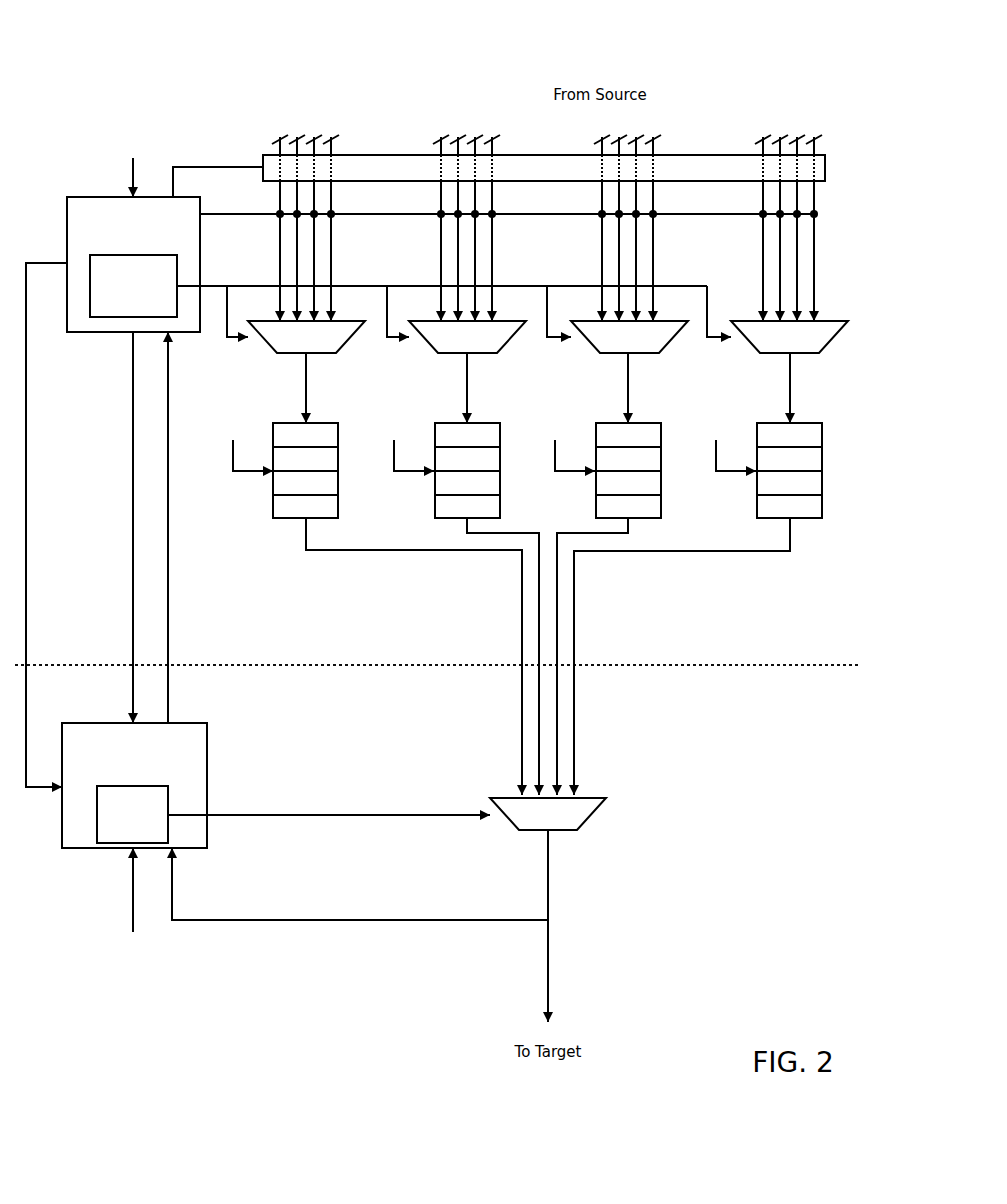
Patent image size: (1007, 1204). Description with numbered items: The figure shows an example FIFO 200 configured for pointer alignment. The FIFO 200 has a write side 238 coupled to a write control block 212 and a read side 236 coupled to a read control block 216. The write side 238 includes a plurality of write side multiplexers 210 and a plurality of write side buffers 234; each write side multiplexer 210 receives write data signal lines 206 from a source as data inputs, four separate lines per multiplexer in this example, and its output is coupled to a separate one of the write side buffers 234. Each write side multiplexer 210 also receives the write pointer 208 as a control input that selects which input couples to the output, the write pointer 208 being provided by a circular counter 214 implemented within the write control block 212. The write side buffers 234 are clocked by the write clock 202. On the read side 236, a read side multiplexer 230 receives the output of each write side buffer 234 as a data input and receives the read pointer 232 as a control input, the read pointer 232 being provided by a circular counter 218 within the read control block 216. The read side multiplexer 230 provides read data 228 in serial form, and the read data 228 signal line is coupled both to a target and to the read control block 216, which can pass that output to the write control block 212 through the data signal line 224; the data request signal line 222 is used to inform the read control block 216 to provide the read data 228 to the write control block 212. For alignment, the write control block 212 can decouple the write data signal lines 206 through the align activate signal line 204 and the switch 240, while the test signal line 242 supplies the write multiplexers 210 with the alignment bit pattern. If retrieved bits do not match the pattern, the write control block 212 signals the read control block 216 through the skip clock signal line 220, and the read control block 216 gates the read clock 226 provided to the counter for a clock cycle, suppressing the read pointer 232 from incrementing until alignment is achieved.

The FIFO 200 is at (325, 44).
The write clock W_Clk 202 is at (433, 284).
The align activate signal line 204 is at (218, 158).
The write data signal lines 206 is at (547, 196).
The write pointer 208 is at (454, 285).
The write side multiplexer 210 is at (548, 372).
The write control block 212 is at (133, 264).
The circular counter 214 is at (133, 286).
The read control block 216 is at (134, 785).
The circular counter 218 is at (132, 814).
The skip clock signal line 220 is at (101, 527).
The data request signal line 222 is at (61, 525).
The data signal line 224 is at (188, 527).
The read clock 226 is at (133, 913).
The read data 228 is at (401, 926).
The read side multiplexer 230 is at (548, 814).
The read pointer 232 is at (329, 788).
The write side buffer 234 is at (565, 609).
The read side 236 is at (437, 691).
The write side 238 is at (437, 637).
The switch 240 is at (544, 168).
The test signal line 242 is at (509, 236).